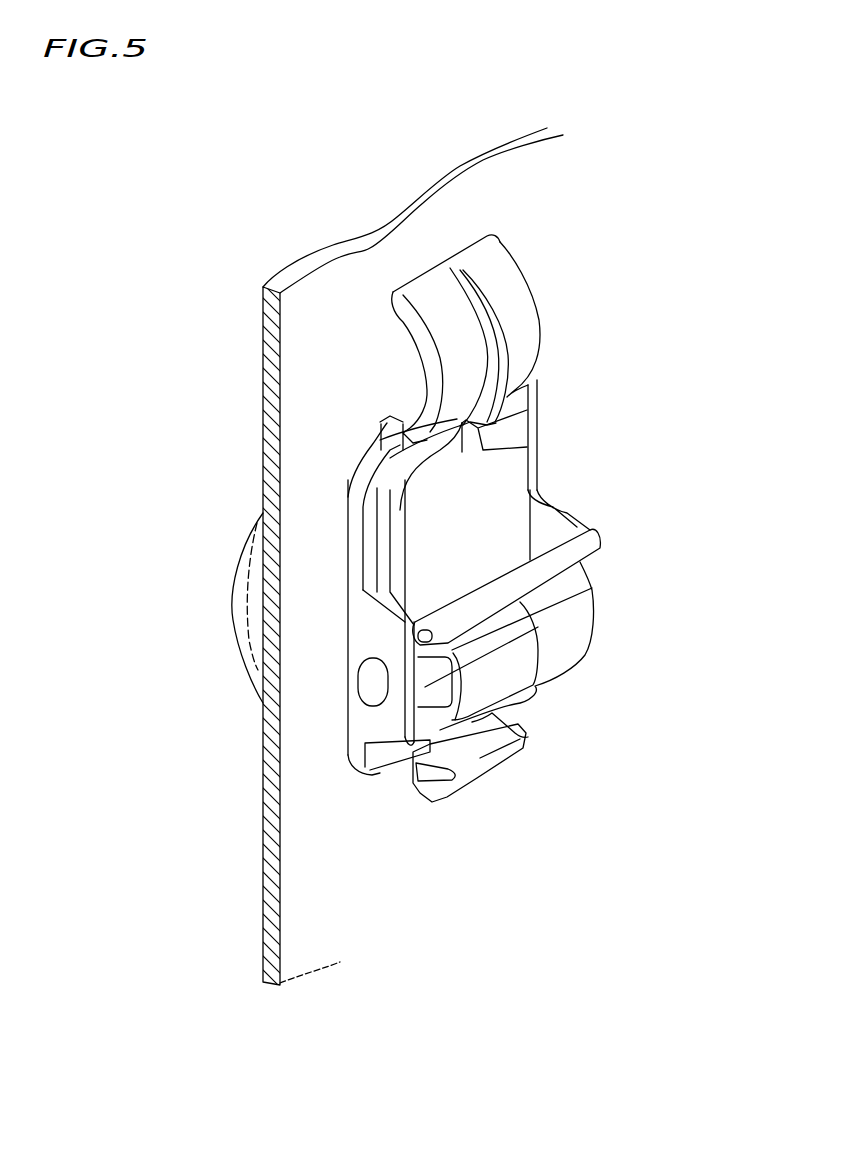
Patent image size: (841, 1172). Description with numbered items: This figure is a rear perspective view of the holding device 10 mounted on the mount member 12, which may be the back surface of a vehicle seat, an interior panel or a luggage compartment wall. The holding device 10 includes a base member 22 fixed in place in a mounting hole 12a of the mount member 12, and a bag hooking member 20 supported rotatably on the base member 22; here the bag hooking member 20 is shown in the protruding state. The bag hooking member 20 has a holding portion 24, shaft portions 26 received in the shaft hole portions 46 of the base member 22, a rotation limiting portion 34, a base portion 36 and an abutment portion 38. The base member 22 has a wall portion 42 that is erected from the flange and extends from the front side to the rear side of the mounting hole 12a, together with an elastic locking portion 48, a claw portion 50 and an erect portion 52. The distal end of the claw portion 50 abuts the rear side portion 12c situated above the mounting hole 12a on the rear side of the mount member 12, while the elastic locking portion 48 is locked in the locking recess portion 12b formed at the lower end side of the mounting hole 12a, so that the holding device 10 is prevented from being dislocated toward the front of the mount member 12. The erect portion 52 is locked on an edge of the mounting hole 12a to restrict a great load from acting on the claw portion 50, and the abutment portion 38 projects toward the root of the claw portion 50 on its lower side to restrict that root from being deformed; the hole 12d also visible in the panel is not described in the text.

The holding device 10 is at (393, 757).
The mount member 12 is at (315, 285).
The mounting hole 12a is at (350, 470).
The locking recess portion 12b is at (410, 769).
The rear side portion 12c is at (368, 262).
The mounting hole 12d is at (340, 637).
The bag hooking member 20 is at (568, 633).
The base member 22 is at (375, 446).
The holding portion 24 is at (232, 590).
The shaft portions 26 is at (352, 697).
The rotation limiting portion 34 is at (553, 563).
The base portion 36 is at (487, 487).
The abutment portion 38 is at (478, 443).
The wall portion 42 is at (540, 520).
The shaft hole portions 46 is at (373, 687).
The elastic locking portion 48 is at (492, 758).
The claw portion 50 is at (523, 298).
The erect portion 52 is at (387, 423).